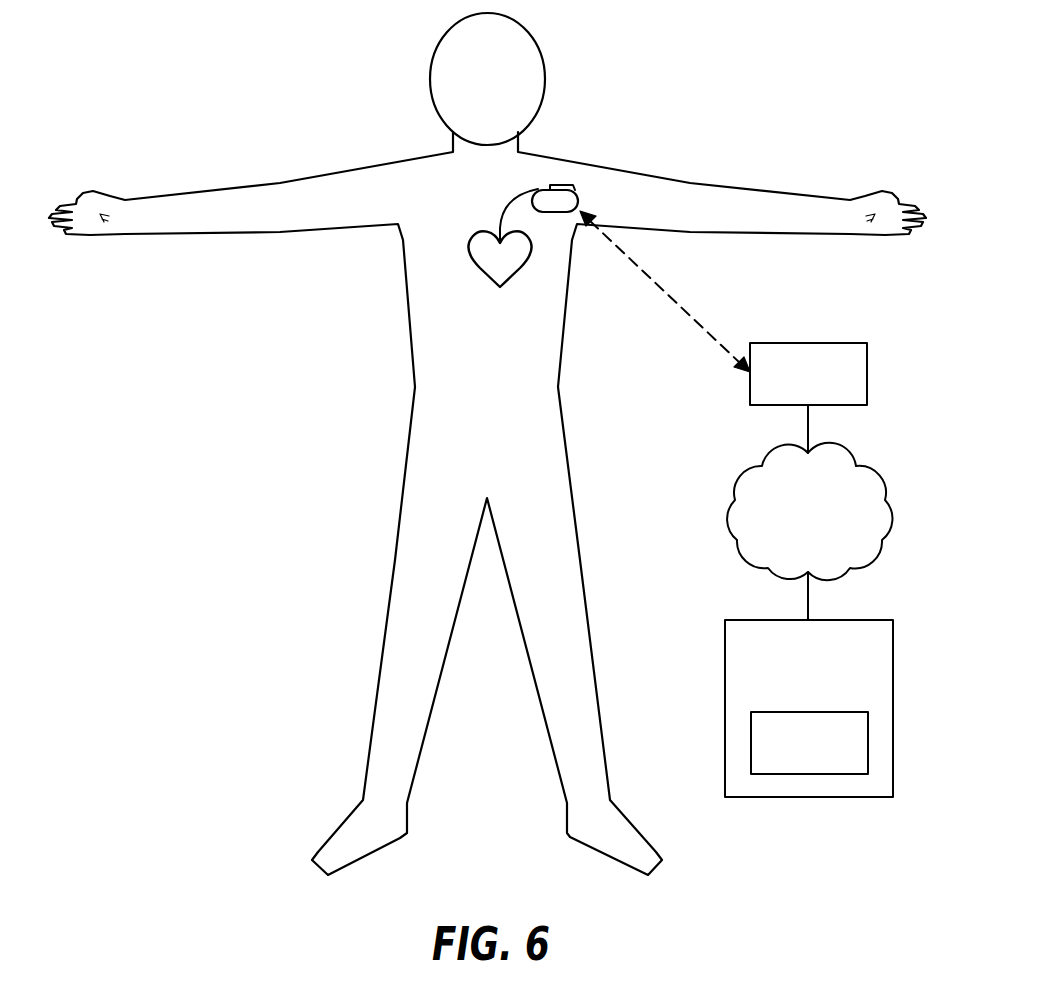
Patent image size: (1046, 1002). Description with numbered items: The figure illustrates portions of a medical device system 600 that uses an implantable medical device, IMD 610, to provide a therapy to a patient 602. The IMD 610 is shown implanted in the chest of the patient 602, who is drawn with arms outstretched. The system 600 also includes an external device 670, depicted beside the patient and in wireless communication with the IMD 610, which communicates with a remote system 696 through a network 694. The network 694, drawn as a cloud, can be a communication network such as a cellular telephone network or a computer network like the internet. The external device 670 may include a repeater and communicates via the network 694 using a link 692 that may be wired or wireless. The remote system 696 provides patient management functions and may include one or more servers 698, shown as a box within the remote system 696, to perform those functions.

The system 600 is at (813, 41).
The patient 602 is at (406, 306).
The IMD 610 is at (558, 185).
The external device 670 is at (808, 343).
The link 692 is at (810, 428).
The network 694 is at (886, 512).
The remote system 696 is at (835, 619).
The servers 698 is at (810, 712).